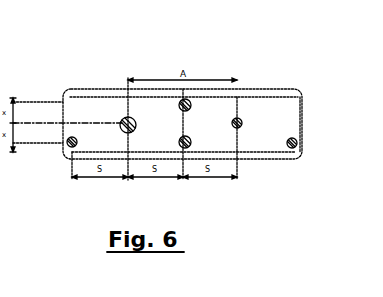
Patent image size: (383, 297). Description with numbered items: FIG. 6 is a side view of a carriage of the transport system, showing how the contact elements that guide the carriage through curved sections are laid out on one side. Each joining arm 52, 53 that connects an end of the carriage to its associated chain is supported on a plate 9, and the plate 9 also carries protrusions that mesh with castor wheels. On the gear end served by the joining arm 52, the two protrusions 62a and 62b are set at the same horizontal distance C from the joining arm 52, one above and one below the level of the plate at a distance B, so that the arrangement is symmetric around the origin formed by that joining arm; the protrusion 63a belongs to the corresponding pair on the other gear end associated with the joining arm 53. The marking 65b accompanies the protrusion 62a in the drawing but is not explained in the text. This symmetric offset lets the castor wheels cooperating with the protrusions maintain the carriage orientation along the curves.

The plate 9 is at (93, 110).
The joining arm 52 is at (126, 117).
The joining arm 53 is at (240, 121).
The protrusion 62a is at (192, 99).
The fastening element 65b is at (185, 137).
The protrusion 62b is at (68, 147).
The protrusion 63a is at (295, 146).